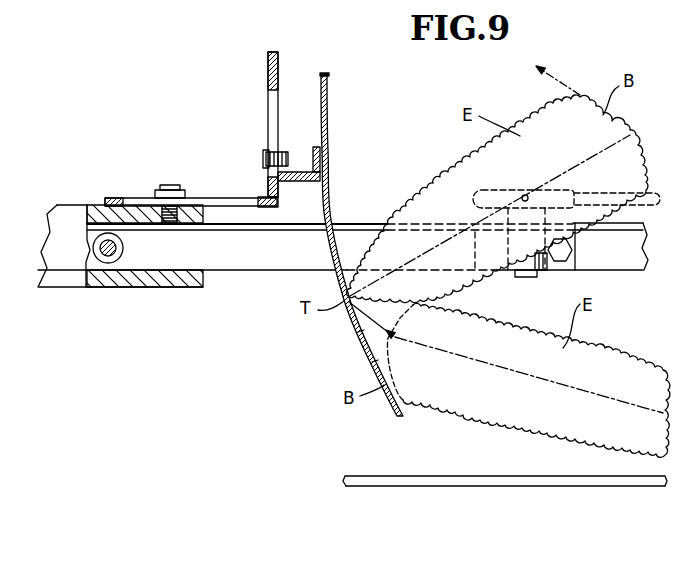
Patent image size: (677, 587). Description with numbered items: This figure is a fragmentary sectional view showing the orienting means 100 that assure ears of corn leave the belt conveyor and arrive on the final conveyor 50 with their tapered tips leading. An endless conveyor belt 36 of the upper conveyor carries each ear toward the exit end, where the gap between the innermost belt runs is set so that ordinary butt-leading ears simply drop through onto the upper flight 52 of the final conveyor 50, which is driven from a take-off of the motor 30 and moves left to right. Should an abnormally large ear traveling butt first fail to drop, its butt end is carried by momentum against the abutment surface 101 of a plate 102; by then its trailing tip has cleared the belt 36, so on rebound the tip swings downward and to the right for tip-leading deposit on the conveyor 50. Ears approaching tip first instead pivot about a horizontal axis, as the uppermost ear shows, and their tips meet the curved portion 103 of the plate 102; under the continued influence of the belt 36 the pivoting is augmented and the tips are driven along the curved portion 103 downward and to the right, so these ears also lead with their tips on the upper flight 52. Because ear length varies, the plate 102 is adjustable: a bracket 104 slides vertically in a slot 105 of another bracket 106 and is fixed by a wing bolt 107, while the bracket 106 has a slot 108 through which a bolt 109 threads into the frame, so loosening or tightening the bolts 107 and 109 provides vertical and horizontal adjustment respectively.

The orienting means 100 is at (395, 128).
The abutment surface 101 is at (328, 135).
The plate 102 is at (316, 72).
The curved portion 103 is at (358, 331).
The bracket 104 is at (302, 182).
The slot 105 is at (270, 114).
The bracket 106 is at (278, 53).
The wing bolt 107 is at (263, 159).
The slot 108 is at (210, 198).
The bolt 109 is at (162, 190).
The motor 30 is at (533, 190).
The conveyor belt 36 is at (655, 198).
The final conveyor 50 is at (432, 472).
The upper flight 52 is at (463, 488).